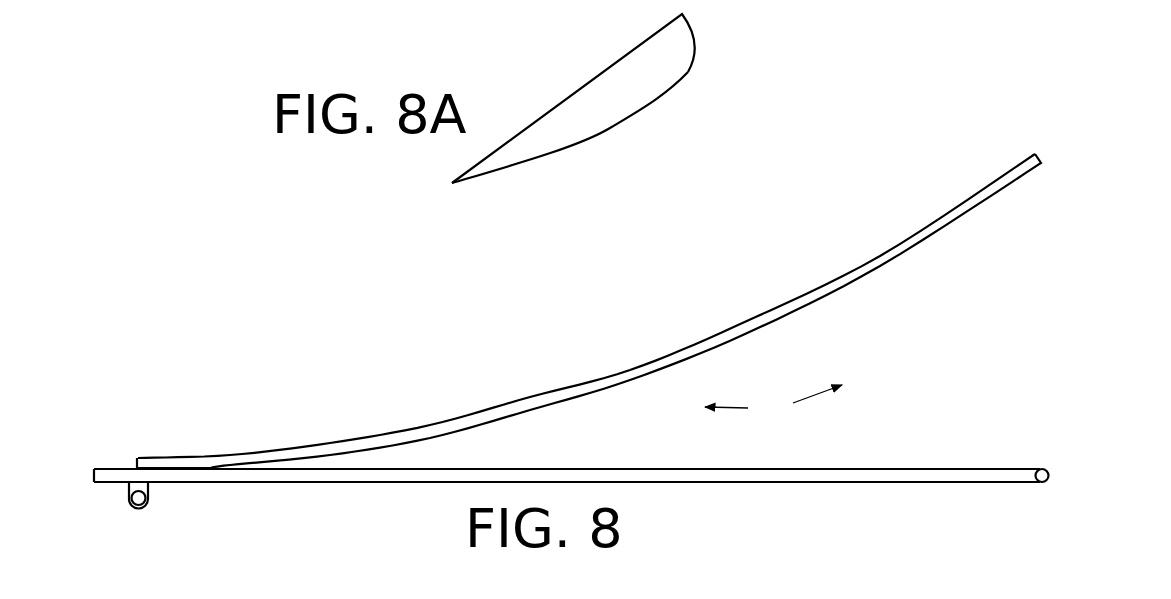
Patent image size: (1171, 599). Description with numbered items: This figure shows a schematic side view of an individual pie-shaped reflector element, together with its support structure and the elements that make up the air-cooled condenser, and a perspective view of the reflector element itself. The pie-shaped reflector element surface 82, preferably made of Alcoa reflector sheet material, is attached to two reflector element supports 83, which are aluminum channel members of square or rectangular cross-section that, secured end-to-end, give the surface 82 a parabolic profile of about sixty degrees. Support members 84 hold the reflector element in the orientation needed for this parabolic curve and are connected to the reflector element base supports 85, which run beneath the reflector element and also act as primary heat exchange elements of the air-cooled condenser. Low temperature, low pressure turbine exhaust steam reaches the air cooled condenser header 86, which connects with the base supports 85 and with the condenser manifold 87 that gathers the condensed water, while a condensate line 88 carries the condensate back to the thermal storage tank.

In FIG. 8A, the pie-shaped reflector element surface 82 is at (587, 97).
In FIG. 8, the pie-shaped reflector element surface 82 is at (589, 311).
In FIG. 8, the reflector element support 83 is at (808, 305).
In FIG. 8, the support member 84 is at (773, 403).
In FIG. 8, the reflector element base support 85 is at (567, 483).
In FIG. 8, the air cooled condenser header 86 is at (1048, 468).
In FIG. 8, the condenser manifold 87 is at (185, 485).
In FIG. 8, the condensate line 88 is at (128, 503).